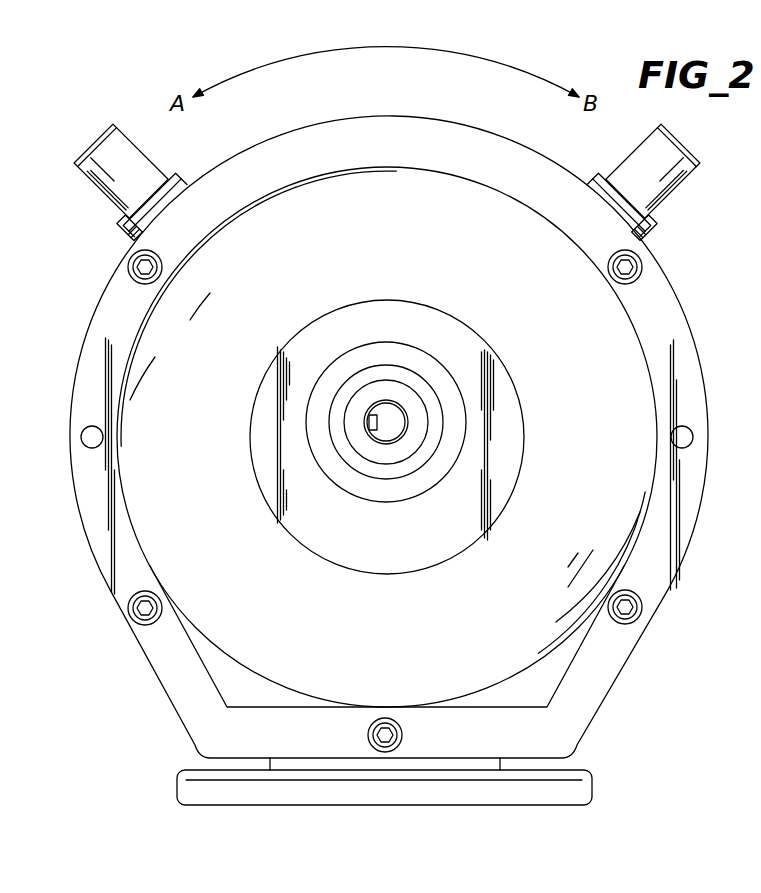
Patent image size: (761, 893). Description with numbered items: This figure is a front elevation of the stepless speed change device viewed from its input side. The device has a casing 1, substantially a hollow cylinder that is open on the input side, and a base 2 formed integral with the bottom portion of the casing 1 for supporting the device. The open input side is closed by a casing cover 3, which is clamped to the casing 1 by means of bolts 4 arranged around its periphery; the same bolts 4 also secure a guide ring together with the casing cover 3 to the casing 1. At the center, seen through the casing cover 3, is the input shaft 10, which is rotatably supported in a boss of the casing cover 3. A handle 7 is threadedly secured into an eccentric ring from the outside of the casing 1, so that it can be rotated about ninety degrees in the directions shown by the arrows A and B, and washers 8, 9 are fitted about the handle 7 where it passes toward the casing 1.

The casing 1 is at (102, 575).
The base 2 is at (593, 782).
The casing cover 3 is at (618, 487).
The bolts 4 is at (643, 607).
The handle 7 is at (106, 194).
The washer 8 is at (193, 172).
The washer 9 is at (174, 176).
The input shaft 10 is at (398, 421).